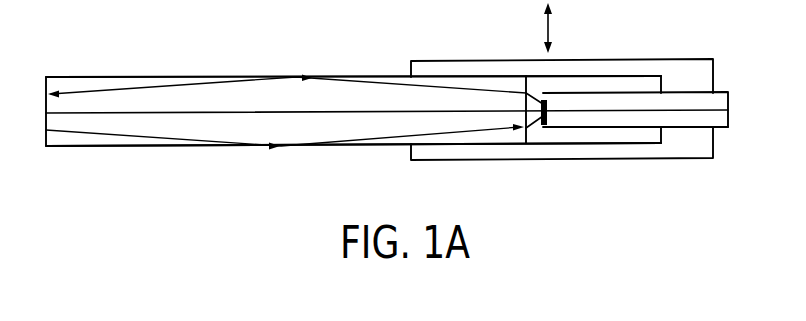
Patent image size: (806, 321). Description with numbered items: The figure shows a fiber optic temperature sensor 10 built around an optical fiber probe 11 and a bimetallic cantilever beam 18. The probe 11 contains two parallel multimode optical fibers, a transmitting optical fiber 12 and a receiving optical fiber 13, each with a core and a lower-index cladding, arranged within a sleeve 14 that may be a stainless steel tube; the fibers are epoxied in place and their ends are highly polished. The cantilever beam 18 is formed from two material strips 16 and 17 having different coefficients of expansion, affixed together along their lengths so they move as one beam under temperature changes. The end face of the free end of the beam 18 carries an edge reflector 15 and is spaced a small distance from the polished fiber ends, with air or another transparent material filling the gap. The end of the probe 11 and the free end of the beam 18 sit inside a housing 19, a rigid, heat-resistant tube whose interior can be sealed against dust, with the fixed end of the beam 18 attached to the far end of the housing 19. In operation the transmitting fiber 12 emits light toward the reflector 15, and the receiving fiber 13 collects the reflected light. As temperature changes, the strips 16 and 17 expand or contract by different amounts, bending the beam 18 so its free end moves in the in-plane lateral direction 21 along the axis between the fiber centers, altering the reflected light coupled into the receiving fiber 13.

The sensor 10 is at (360, 53).
The optical fiber probe 11 is at (160, 66).
The transmitting optical fiber 12 is at (73, 139).
The receiving optical fiber 13 is at (76, 83).
The sleeve 14 is at (199, 77).
The edge reflector 15 is at (543, 122).
The material strip 16 is at (718, 117).
The material strip 17 is at (718, 96).
The cantilever beam 18 is at (740, 78).
The housing 19 is at (655, 59).
The in-plane lateral direction 21 is at (545, 30).